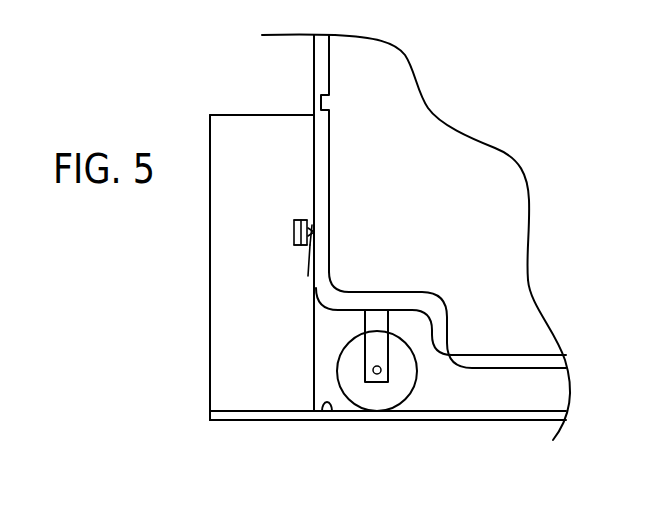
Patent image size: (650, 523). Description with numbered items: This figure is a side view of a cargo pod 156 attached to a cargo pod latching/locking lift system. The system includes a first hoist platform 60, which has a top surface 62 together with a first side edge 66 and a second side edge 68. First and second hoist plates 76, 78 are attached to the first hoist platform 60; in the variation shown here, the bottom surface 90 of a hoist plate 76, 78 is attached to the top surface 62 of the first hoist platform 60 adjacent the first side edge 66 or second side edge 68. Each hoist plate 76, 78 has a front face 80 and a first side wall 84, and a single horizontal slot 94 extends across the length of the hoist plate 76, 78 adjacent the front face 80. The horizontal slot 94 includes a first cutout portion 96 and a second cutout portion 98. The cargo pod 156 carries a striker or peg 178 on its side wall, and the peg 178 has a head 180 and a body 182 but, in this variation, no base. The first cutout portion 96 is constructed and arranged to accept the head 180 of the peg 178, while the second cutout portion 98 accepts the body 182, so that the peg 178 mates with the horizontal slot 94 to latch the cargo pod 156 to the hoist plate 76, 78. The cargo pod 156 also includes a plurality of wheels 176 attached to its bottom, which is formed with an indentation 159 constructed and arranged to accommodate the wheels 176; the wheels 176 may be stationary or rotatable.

The first hoist platform 60 is at (478, 416).
The top surface 62 is at (333, 411).
The first side edge 66 is at (156, 427).
The second side edge 68 is at (210, 418).
The first hoist plate 76 is at (222, 82).
The second hoist plate 78 is at (237, 114).
The front face 80 is at (314, 152).
The first side wall 84 is at (226, 300).
The bottom surface 90 is at (263, 412).
The horizontal slot 94 is at (301, 219).
The first cutout portion 96 is at (302, 247).
The second cutout portion 98 is at (312, 225).
The cargo pod 156 is at (493, 237).
The indentation 159 is at (404, 312).
The wheels 176 is at (397, 387).
The striker or peg 178 is at (313, 233).
The head 180 is at (296, 231).
The body 182 is at (308, 276).